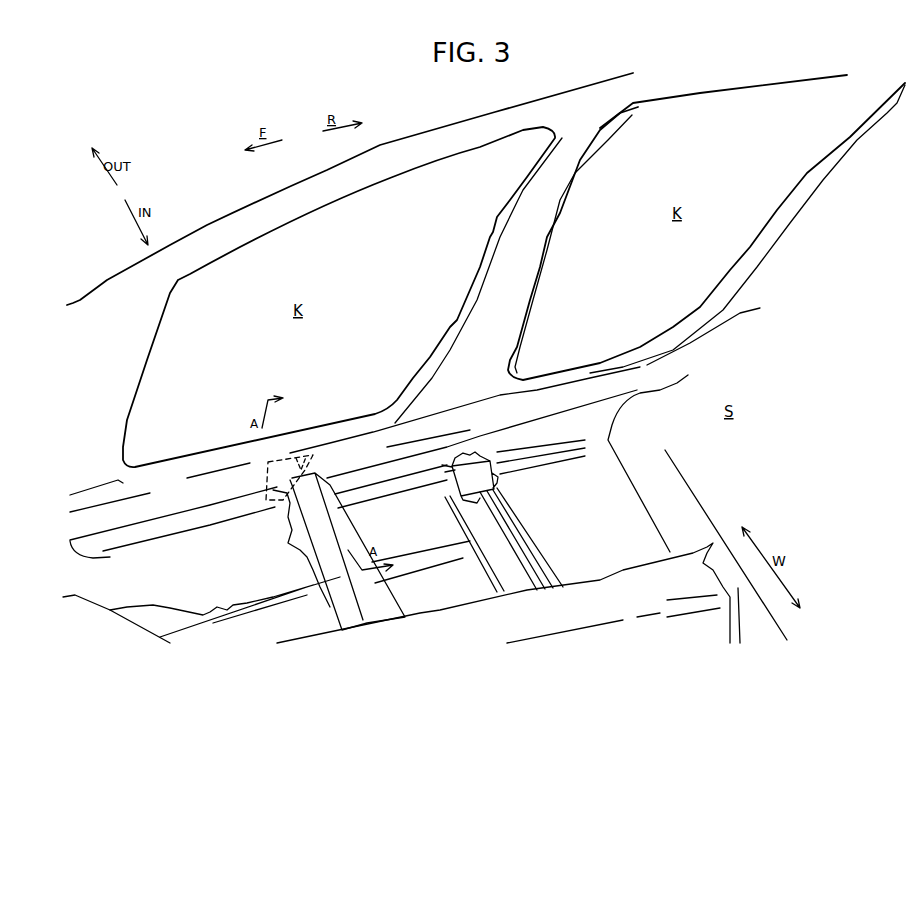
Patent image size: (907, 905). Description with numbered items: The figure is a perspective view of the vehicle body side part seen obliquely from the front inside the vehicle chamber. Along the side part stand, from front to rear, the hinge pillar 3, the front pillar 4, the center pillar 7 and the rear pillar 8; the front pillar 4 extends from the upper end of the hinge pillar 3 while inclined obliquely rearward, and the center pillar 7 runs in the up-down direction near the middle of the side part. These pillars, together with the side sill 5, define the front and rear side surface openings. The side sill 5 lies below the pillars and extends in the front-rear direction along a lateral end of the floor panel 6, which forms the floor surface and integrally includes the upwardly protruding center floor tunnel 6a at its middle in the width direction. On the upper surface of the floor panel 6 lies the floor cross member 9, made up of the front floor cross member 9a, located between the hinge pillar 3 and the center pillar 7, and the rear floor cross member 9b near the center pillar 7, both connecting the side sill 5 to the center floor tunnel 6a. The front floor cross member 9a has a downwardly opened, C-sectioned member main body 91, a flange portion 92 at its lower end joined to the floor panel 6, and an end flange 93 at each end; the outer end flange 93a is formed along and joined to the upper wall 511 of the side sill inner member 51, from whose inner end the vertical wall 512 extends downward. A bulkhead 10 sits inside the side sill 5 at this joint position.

The hinge pillar 3 is at (135, 380).
The front pillar 4 is at (217, 233).
The side sill 5 is at (353, 475).
The floor panel 6 is at (627, 512).
The center floor tunnel 6a is at (623, 573).
The center pillar 7 is at (537, 269).
The rear pillar 8 is at (820, 197).
The floor cross member 9 is at (490, 544).
The front floor cross member 9a is at (402, 595).
The rear floor cross member 9b is at (530, 533).
The bulkhead 10 is at (288, 457).
The side sill inner member 51 is at (575, 430).
The upper wall 511 is at (240, 490).
The vertical wall 512 is at (207, 518).
The member main body 91 is at (343, 538).
The flange portion 92 is at (308, 553).
The end flange 93 is at (397, 477).
The end flange on the outer side 93a is at (307, 473).